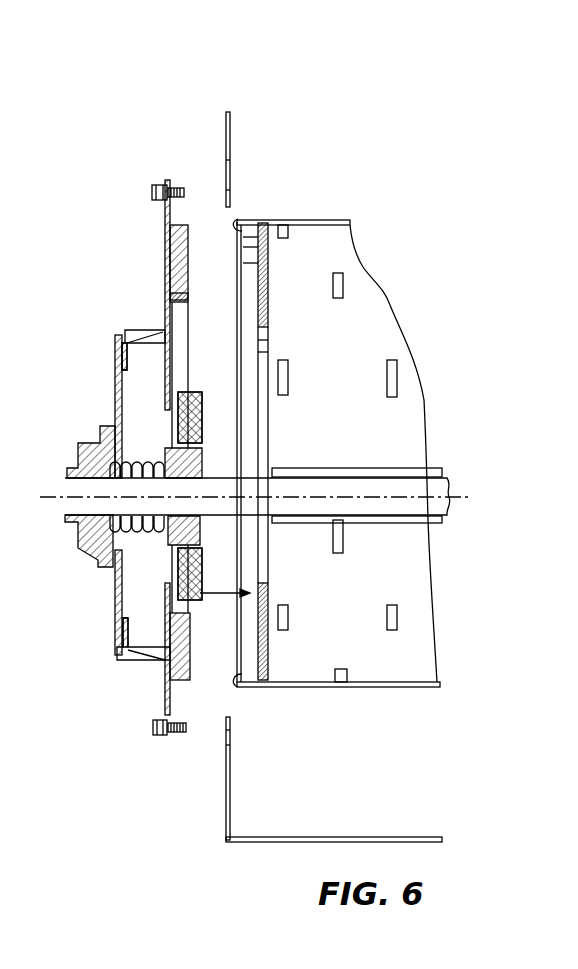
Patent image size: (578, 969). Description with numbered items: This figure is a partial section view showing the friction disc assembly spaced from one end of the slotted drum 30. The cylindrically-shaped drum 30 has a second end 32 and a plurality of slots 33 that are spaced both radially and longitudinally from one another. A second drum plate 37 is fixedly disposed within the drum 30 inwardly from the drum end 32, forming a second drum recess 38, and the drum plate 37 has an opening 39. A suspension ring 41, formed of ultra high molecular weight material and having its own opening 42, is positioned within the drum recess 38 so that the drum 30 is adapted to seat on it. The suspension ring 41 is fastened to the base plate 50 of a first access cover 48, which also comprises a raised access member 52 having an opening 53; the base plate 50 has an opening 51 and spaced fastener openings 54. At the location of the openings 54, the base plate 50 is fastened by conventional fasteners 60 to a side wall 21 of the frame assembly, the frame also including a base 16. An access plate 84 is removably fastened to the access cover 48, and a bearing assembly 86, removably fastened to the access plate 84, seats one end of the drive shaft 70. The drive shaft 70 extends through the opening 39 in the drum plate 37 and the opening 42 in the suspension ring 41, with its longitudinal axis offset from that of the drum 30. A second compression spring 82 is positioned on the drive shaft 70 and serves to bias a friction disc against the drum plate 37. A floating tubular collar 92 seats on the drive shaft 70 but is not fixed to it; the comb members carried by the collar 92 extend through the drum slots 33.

The base 16 is at (340, 837).
The side wall 21 is at (227, 131).
The drum 30 is at (368, 688).
The second end 32 is at (237, 302).
The slots 33 is at (333, 285).
The second drum plate 37 is at (270, 640).
The second drum recess 38 is at (240, 222).
The opening 39 is at (264, 352).
The suspension ring 41 is at (176, 240).
The opening 42 is at (182, 302).
The first access cover 48 is at (130, 330).
The base plate 50 is at (165, 291).
The opening 51 is at (180, 414).
The raised access member 52 is at (136, 660).
The opening 53 is at (118, 613).
The fastener openings 54 is at (157, 188).
The fasteners 60 is at (150, 195).
The drive shaft 70 is at (451, 484).
The second compression spring 82 is at (102, 556).
The access plate 84 is at (115, 350).
The bearing assembly 86 is at (100, 431).
The floating tubular collar 92 is at (398, 468).